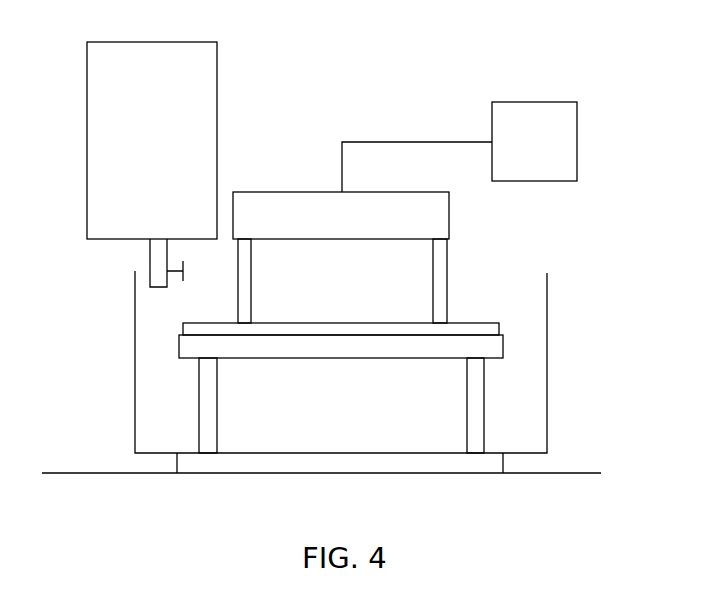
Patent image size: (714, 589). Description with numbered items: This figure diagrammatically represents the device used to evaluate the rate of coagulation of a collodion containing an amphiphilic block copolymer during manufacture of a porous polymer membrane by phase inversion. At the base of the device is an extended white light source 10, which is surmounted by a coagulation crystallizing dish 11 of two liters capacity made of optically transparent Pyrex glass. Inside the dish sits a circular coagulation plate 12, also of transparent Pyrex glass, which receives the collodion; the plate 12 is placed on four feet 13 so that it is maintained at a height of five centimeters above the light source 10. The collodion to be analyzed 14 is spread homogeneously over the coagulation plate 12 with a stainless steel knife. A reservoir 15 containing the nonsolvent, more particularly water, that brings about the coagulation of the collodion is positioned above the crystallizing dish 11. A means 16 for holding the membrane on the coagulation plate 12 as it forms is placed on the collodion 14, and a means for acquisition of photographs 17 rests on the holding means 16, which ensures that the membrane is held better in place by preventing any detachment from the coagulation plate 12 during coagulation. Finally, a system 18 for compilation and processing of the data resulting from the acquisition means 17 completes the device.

The extended white light source 10 is at (235, 463).
The coagulation crystallizing dish 11 is at (135, 414).
The circular coagulation plate 12 is at (367, 358).
The feet 13 is at (217, 405).
The collodion to be analyzed 14 is at (313, 323).
The reservoir 15 is at (87, 177).
The means for holding the membrane 16 is at (447, 290).
The means for acquisition of photographs 17 is at (449, 216).
The system for compilation and processing of the data 18 is at (552, 102).